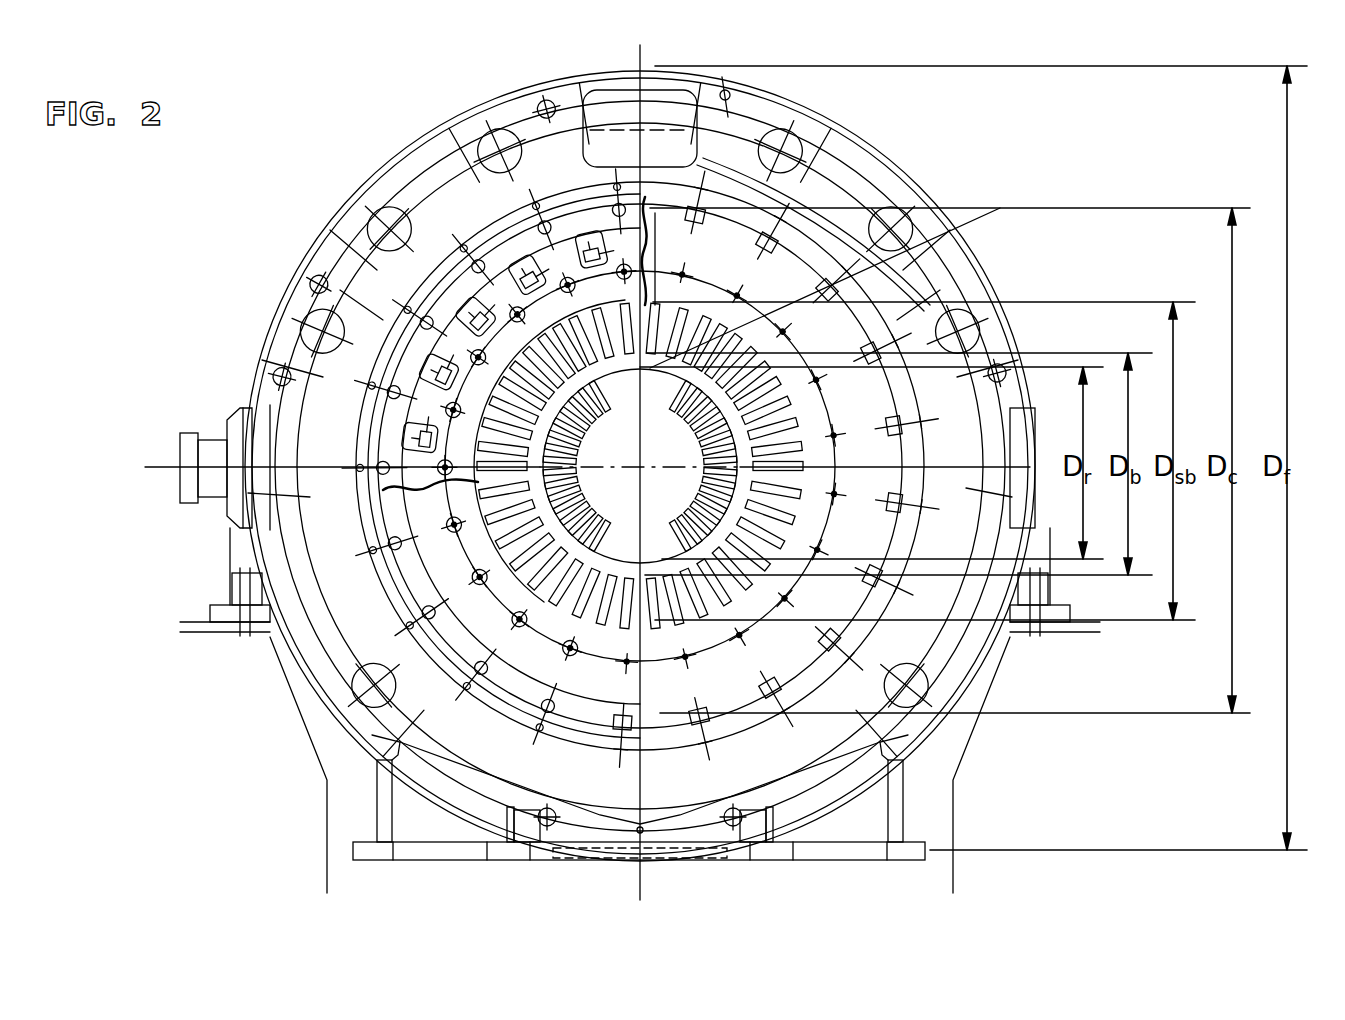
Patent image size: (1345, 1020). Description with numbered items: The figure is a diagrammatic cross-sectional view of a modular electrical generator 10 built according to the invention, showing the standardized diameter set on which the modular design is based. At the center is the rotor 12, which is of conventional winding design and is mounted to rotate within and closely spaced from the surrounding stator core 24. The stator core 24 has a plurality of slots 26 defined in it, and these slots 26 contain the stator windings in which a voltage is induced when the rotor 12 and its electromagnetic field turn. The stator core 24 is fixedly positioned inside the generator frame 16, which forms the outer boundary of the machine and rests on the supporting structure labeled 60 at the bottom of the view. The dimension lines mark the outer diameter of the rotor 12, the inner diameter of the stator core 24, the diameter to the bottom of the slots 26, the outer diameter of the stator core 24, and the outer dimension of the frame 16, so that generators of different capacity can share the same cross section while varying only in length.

The modular electrical generator 10 is at (303, 195).
The rotor 12 is at (691, 297).
The generator frame 16 is at (593, 86).
The stator core 24 is at (420, 575).
The slots 26 is at (496, 540).
The base 60 is at (432, 852).